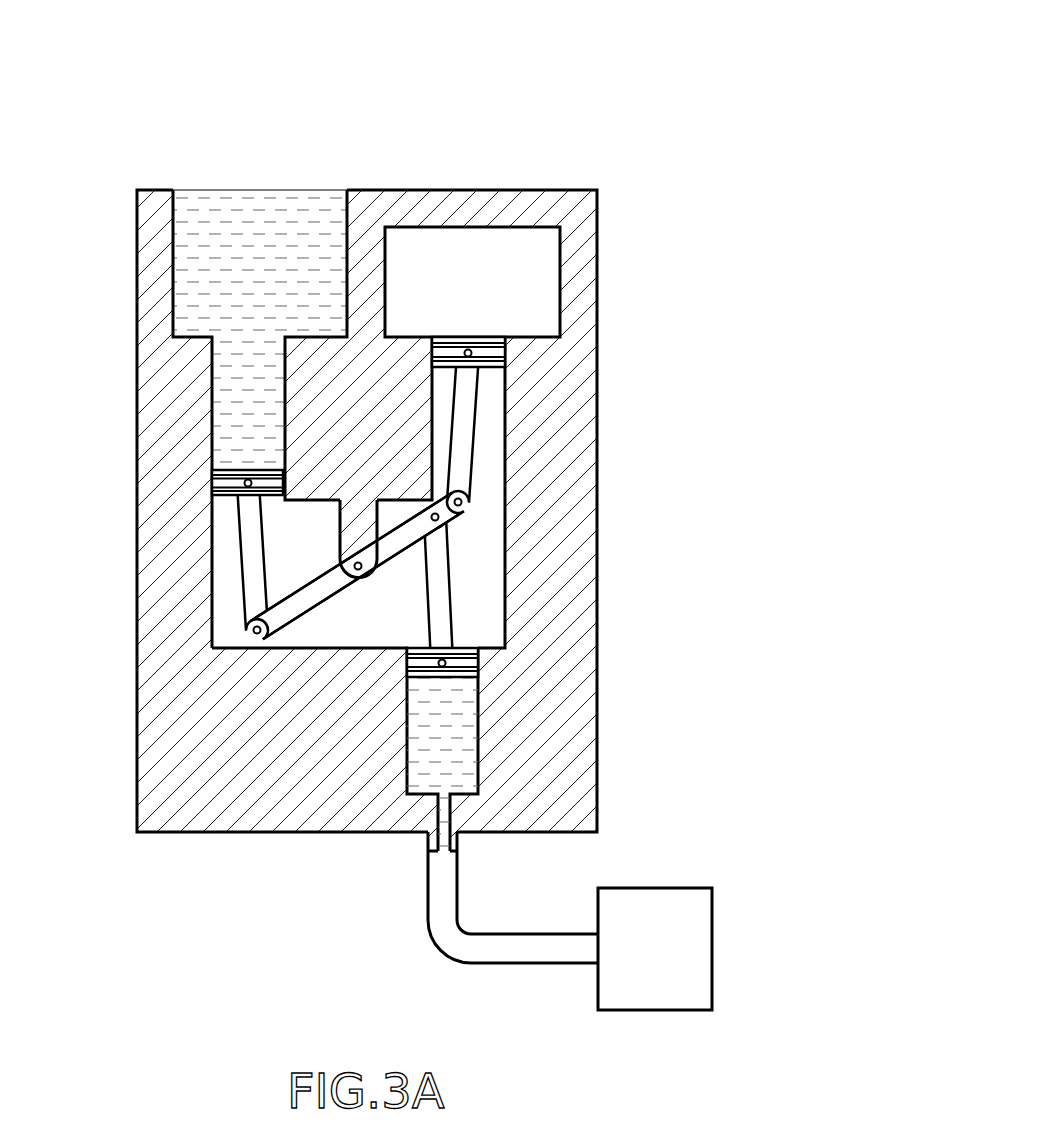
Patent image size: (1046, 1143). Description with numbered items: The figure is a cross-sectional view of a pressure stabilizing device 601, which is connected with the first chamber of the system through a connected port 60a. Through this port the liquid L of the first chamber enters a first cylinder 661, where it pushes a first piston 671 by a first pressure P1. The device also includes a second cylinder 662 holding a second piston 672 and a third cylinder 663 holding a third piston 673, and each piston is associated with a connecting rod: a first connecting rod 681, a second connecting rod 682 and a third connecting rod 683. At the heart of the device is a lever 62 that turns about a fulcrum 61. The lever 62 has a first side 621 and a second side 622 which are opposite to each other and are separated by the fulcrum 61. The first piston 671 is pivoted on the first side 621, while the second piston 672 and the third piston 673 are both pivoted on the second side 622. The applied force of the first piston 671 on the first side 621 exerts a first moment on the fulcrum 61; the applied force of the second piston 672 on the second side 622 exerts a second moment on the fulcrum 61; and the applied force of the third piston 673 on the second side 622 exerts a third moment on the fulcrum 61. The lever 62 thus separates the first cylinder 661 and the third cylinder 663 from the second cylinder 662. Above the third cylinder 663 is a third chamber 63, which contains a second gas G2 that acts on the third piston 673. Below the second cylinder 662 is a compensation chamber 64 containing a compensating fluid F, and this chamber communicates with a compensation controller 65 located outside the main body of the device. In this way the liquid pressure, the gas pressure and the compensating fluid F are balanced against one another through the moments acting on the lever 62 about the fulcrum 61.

The pressure stabilizing device 601 is at (725, 33).
The connected port 60a is at (286, 190).
The liquid L is at (220, 198).
The second gas G2 is at (492, 245).
The first pressure P1 is at (192, 262).
The third chamber 63 is at (560, 270).
The first cylinder 661 is at (210, 410).
The second cylinder 662 is at (480, 732).
The third cylinder 663 is at (505, 435).
The first piston 671 is at (226, 485).
The second piston 672 is at (465, 660).
The third piston 673 is at (492, 355).
The first connecting rod 681 is at (250, 551).
The second connecting rod 682 is at (448, 573).
The third connecting rod 683 is at (468, 408).
The lever 62 is at (316, 552).
The first side 621 is at (303, 596).
The second side 622 is at (402, 545).
The fulcrum 61 is at (357, 582).
The compensation chamber 64 is at (452, 805).
The compensation controller 65 is at (660, 988).
The compensating fluid F is at (407, 740).